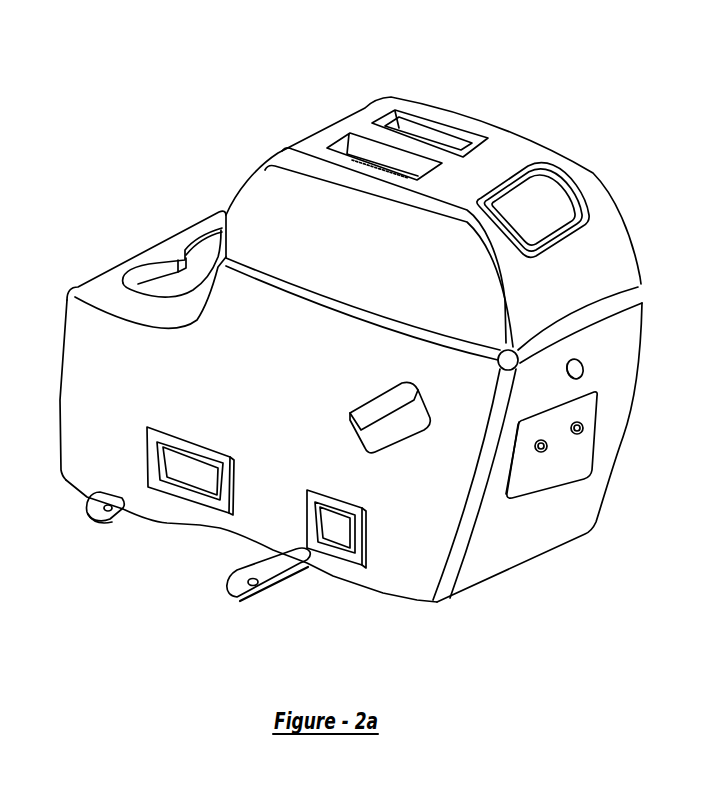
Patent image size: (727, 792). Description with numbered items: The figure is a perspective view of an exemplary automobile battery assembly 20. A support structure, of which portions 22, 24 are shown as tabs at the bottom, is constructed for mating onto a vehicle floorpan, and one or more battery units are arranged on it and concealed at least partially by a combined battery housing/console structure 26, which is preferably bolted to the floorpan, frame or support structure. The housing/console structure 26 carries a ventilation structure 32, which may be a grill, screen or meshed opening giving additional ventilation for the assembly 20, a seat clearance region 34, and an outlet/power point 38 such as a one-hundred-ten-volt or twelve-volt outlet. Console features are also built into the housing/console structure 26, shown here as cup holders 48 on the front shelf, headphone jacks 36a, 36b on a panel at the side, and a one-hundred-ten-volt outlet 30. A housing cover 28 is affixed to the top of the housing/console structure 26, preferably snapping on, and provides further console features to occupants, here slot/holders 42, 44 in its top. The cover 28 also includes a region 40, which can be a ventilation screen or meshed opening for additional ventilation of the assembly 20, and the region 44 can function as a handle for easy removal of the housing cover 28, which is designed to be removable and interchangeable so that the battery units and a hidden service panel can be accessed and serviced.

The automobile battery assembly 20 is at (157, 88).
The support structure portion 22 is at (108, 517).
The support structure portion 24 is at (233, 598).
The battery housing/console structure 26 is at (66, 322).
The housing cover 28 is at (494, 130).
The 110V outlet 30 is at (147, 463).
The ventilation structure 32 is at (346, 558).
The seat clearance region 34 is at (397, 432).
The headphone jack 36a is at (541, 452).
The headphone jack 36b is at (577, 434).
The outlet/power point 38 is at (578, 366).
The region 40 is at (568, 197).
The slot/holder 42 is at (419, 114).
The slot/holder 44 is at (341, 150).
The cup holder 48 is at (148, 268).